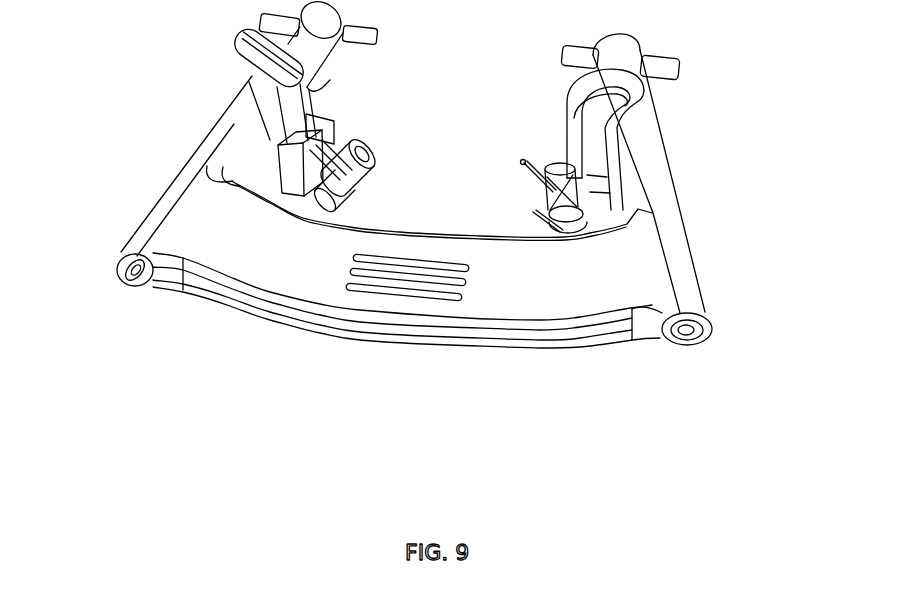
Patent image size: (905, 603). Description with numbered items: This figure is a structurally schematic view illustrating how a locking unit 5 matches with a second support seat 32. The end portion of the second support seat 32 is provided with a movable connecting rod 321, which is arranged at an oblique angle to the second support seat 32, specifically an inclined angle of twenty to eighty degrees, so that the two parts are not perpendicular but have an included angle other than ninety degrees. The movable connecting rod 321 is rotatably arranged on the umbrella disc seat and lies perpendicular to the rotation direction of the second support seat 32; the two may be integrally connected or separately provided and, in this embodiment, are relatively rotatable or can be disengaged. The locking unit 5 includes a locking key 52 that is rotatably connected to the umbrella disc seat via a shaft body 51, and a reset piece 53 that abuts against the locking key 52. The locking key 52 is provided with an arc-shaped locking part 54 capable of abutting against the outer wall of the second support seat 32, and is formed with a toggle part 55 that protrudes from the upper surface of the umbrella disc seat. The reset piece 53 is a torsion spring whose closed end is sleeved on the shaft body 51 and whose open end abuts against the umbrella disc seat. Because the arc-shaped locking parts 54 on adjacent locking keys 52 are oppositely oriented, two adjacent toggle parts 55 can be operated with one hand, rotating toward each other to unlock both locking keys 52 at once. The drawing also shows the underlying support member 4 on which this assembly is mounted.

The arc-shaped connecting band 4 is at (553, 292).
The locking unit 5 is at (590, 148).
The second support seat 32 is at (655, 198).
The movable connecting rod 321 is at (665, 63).
The shaft body 51 is at (302, 206).
The locking key 52 is at (292, 180).
The reset piece 53 is at (375, 165).
The arc-shaped locking part 54 is at (270, 150).
The toggle part 55 is at (262, 55).